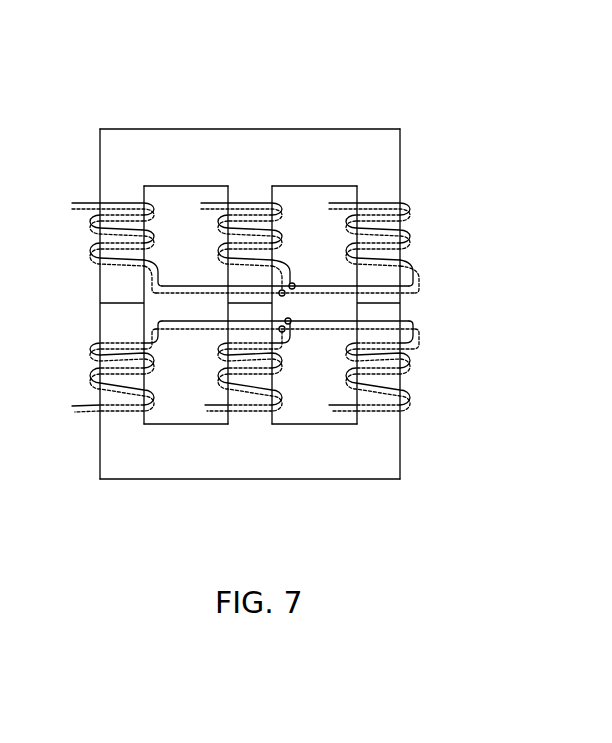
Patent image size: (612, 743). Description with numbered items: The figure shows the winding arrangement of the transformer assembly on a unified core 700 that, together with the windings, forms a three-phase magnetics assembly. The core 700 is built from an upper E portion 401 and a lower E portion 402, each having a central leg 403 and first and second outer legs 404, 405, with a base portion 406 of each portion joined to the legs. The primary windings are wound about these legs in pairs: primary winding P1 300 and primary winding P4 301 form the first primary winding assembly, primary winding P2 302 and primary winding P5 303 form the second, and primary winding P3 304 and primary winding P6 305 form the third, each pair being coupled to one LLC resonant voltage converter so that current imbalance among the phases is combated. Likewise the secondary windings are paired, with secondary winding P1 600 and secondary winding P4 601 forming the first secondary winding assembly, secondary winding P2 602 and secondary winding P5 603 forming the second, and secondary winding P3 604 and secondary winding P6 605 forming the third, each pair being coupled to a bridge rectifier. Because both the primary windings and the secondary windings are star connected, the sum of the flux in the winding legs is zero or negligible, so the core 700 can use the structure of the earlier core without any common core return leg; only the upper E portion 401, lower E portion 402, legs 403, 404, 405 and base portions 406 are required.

The core 700 is at (176, 66).
The upper E portion 401 is at (125, 128).
The lower E portion 402 is at (103, 480).
The central leg 403 is at (259, 198).
The first outer leg 404 is at (120, 288).
The second outer leg 405 is at (385, 253).
The base portion 406 is at (194, 165).
The primary winding P1 300 is at (75, 202).
The primary winding P2 302 is at (252, 198).
The primary winding P3 304 is at (405, 232).
The primary winding P4 301 is at (80, 406).
The primary winding P5 303 is at (203, 395).
The primary winding P6 305 is at (403, 398).
The secondary winding P1 600 is at (88, 232).
The secondary winding P2 602 is at (268, 197).
The secondary winding P3 604 is at (402, 203).
The secondary winding P4 601 is at (85, 413).
The secondary winding P5 603 is at (218, 410).
The secondary winding P6 605 is at (405, 406).